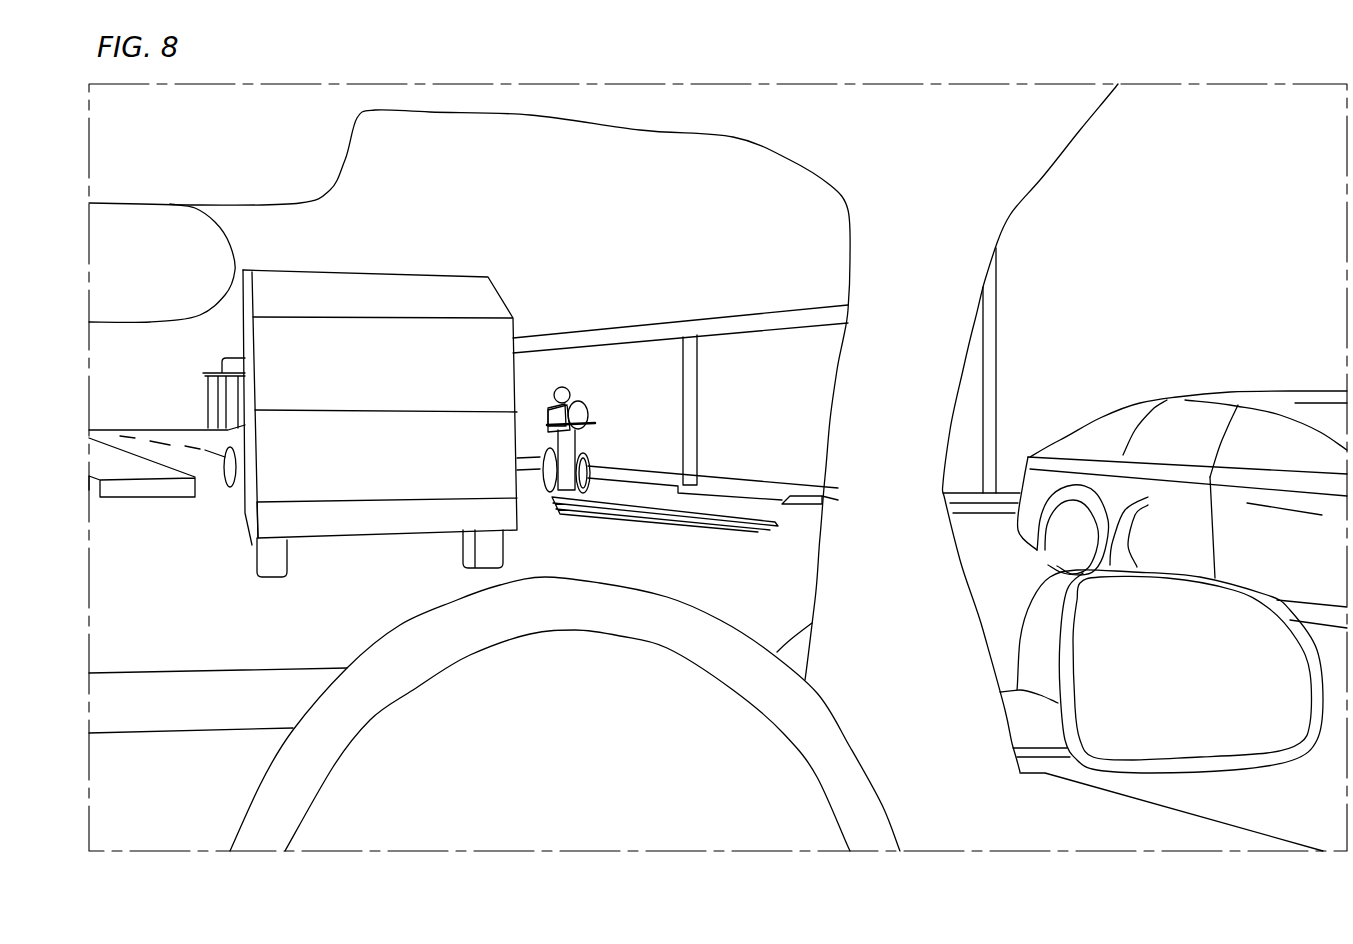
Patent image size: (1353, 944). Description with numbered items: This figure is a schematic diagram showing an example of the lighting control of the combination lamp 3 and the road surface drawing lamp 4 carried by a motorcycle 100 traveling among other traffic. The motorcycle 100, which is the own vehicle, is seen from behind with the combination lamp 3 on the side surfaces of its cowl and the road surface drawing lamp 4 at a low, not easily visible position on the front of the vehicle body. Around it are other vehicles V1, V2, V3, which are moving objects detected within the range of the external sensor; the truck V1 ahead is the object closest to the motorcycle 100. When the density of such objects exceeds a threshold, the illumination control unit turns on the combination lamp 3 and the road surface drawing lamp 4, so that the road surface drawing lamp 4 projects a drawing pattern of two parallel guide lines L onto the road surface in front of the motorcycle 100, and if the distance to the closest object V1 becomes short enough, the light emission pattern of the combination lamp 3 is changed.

The truck V1 is at (392, 277).
The other vehicle V2 is at (1220, 390).
The other vehicle V3 is at (910, 680).
The motorcycle 100 is at (597, 414).
The combination lamp 3 is at (598, 432).
The road surface drawing lamp 4 is at (563, 497).
The guide lines L is at (745, 513).